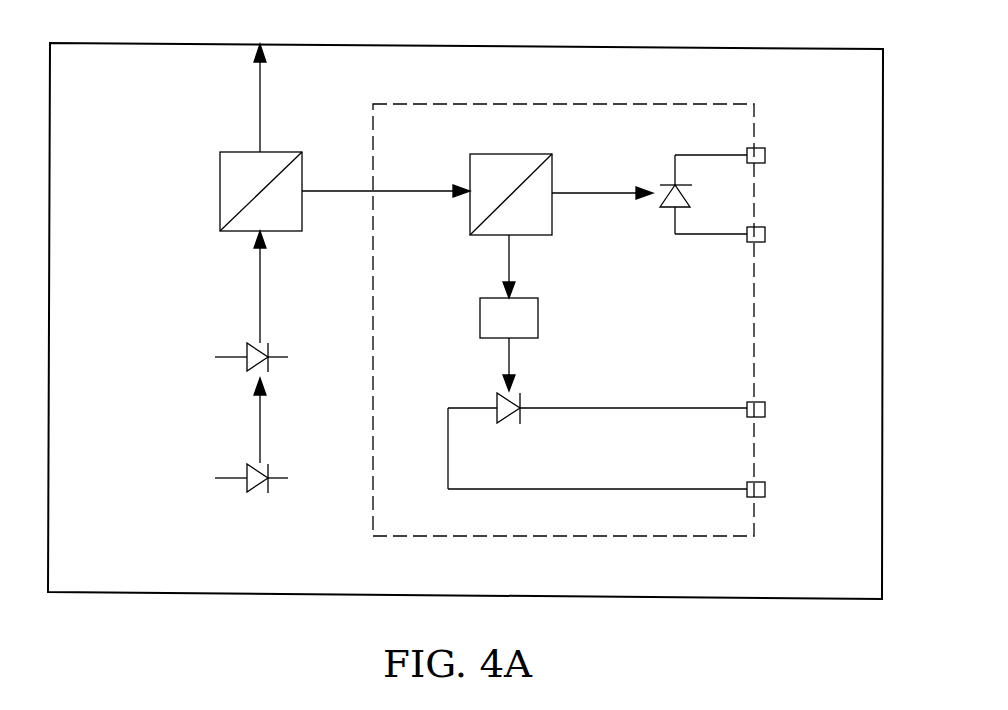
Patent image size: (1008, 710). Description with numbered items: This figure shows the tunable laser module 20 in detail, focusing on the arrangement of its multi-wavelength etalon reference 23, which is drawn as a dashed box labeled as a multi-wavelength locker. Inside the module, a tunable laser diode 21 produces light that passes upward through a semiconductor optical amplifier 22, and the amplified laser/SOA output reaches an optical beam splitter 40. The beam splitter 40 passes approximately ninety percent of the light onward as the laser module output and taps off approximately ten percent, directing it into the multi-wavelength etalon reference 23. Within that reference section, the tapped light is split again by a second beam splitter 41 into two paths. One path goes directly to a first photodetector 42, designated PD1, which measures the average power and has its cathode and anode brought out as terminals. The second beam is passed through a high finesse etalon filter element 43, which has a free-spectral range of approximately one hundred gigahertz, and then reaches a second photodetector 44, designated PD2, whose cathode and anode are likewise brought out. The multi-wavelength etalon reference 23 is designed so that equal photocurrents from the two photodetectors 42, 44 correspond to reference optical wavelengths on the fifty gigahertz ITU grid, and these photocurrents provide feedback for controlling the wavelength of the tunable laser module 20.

The tunable laser module 20 is at (785, 48).
The tunable laser diode 21 is at (247, 492).
The semiconductor optical amplifier 22 is at (247, 369).
The multi-wavelength etalon reference 23 is at (648, 104).
The optical beam splitter 40 is at (220, 232).
The beam splitter 41 is at (470, 235).
The photodetector (PD1) 42 is at (688, 196).
The high finesse etalon filter element 43 is at (480, 308).
The second photodetector (PD2) 44 is at (500, 422).